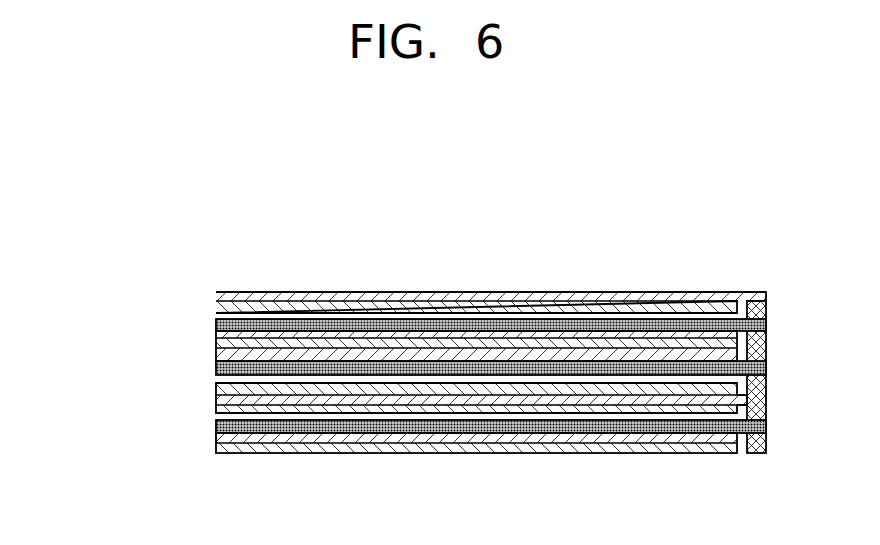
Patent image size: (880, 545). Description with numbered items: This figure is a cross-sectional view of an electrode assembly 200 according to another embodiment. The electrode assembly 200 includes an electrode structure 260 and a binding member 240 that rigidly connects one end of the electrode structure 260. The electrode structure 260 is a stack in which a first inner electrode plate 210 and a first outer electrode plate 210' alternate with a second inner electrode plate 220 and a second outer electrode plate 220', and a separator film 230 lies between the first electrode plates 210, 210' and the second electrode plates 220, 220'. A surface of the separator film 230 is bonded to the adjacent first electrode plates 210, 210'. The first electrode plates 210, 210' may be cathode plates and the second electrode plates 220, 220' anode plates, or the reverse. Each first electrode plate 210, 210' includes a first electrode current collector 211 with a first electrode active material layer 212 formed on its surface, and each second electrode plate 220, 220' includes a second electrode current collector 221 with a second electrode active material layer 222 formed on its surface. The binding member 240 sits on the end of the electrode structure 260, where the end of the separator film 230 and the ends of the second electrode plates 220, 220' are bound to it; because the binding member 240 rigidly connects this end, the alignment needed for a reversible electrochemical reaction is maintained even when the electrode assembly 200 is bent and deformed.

The electrode assembly 200 is at (773, 248).
The first inner electrode plate 210 is at (412, 338).
The first outer electrode plate 210' is at (412, 468).
The first electrode current collector 211 is at (216, 343).
The first electrode active material layer 212 is at (216, 333).
The second inner electrode plate 220 is at (417, 413).
The second outer electrode plate 220' is at (427, 271).
The second electrode current collector 221 is at (232, 297).
The second electrode active material layer 222 is at (217, 303).
The separator film 230 is at (220, 320).
The binding member 240 is at (761, 348).
The electrode structure 260 is at (84, 255).